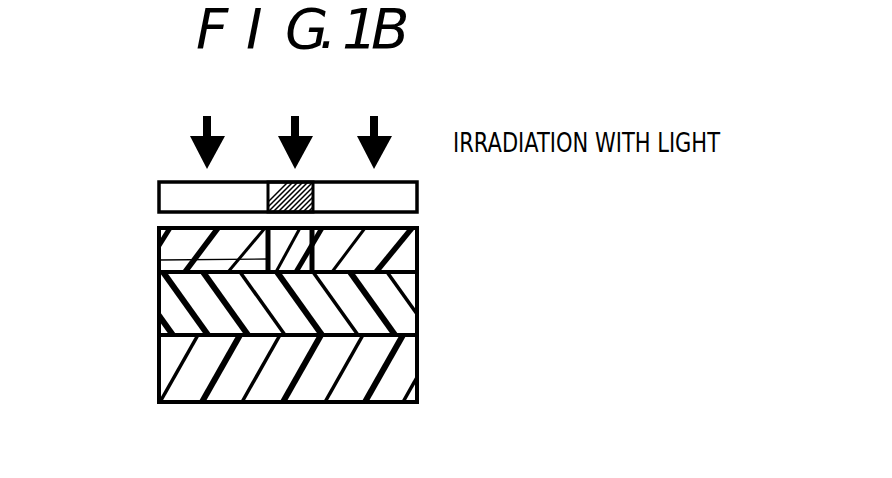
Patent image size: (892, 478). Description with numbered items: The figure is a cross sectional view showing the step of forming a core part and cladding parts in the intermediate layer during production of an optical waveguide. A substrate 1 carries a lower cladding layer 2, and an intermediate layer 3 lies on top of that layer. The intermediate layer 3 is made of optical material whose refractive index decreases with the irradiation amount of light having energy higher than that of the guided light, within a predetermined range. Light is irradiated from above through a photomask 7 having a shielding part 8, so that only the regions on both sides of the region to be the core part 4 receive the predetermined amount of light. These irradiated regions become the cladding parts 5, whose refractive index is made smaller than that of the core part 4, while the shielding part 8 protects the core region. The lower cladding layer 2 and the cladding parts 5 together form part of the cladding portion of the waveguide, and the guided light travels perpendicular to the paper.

The substrate 1 is at (406, 378).
The lower cladding layer 2 is at (406, 312).
The intermediate layer 3 is at (100, 247).
The core part 4 is at (268, 259).
The cladding parts 5 is at (173, 249).
The photomask 7 is at (406, 202).
The shielding part 8 is at (290, 183).